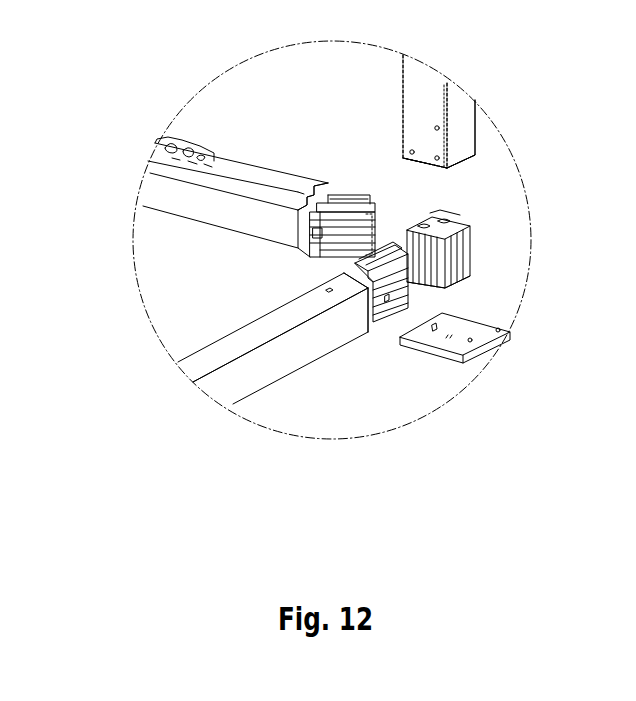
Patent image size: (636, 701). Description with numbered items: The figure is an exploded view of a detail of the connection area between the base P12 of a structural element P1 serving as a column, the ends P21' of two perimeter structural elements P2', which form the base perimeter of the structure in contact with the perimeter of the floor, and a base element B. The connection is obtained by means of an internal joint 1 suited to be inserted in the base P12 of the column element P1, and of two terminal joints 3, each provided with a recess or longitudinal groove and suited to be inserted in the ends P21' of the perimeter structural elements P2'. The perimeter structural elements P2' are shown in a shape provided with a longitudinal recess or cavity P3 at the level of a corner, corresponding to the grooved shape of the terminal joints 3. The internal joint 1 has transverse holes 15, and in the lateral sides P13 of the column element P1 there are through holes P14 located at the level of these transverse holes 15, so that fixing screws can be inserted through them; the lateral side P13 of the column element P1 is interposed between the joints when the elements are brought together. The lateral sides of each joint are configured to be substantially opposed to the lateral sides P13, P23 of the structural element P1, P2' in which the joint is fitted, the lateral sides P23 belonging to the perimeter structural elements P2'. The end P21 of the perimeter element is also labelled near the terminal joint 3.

The longitudinal recess or cavity P3 is at (223, 184).
The end of perimeter structural element P21' is at (307, 151).
The terminal joint 3 is at (352, 208).
The structural element serving as a column P1 is at (472, 95).
The through holes P14 is at (431, 127).
The lateral side of column element P13 is at (461, 139).
The base of structural element P12 is at (464, 170).
The internal joint 1 is at (455, 254).
The transverse holes 15 is at (439, 286).
The base element B is at (470, 341).
The perimeter structural element P2' is at (220, 355).
The lateral side of perimeter structural element P23 is at (305, 343).
The rail end carriage P21 is at (387, 371).